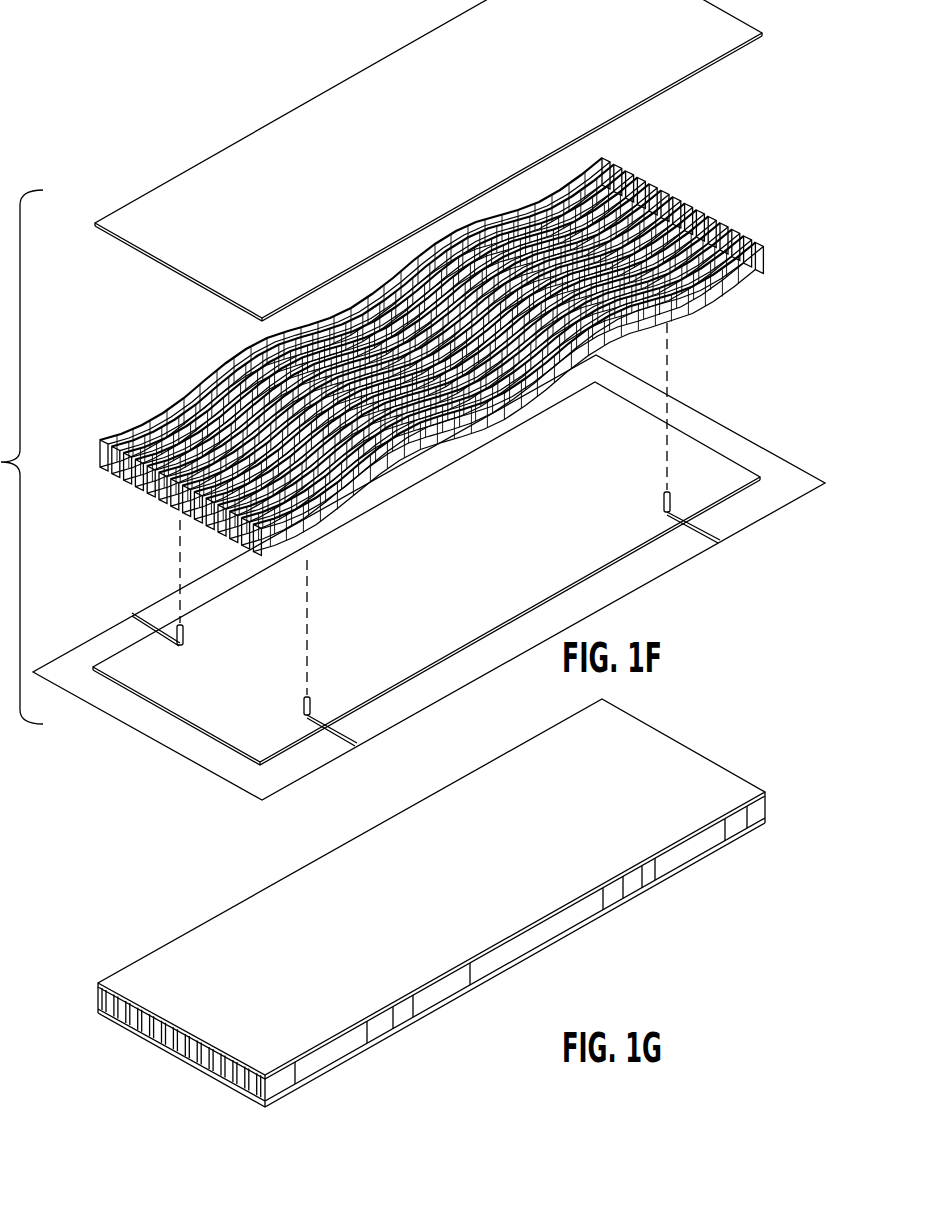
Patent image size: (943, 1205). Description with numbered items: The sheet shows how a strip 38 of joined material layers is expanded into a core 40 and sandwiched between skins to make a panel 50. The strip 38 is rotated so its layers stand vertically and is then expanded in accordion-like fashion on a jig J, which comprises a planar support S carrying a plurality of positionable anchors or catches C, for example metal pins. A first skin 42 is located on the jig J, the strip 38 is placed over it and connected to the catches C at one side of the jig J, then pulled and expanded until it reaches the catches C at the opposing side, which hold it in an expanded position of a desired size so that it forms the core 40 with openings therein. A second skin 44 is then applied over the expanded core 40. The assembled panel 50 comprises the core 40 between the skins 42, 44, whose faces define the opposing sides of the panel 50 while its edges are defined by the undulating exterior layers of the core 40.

In FIG. 1F, the strip 38 is at (693, 213).
In FIG. 1F, the core 40 is at (437, 357).
In FIG. 1G, the core 40 is at (697, 843).
In FIG. 1F, the first skin 42 is at (183, 707).
In FIG. 1G, the first skin 42 is at (278, 1095).
In FIG. 1F, the second skin 44 is at (170, 254).
In FIG. 1G, the second skin 44 is at (128, 975).
In FIG. 1G, the panel 50 is at (422, 907).
In FIG. 1F, the jig J is at (429, 581).
In FIG. 1F, the planar support S is at (745, 450).
In FIG. 1F, the catches C is at (300, 704).